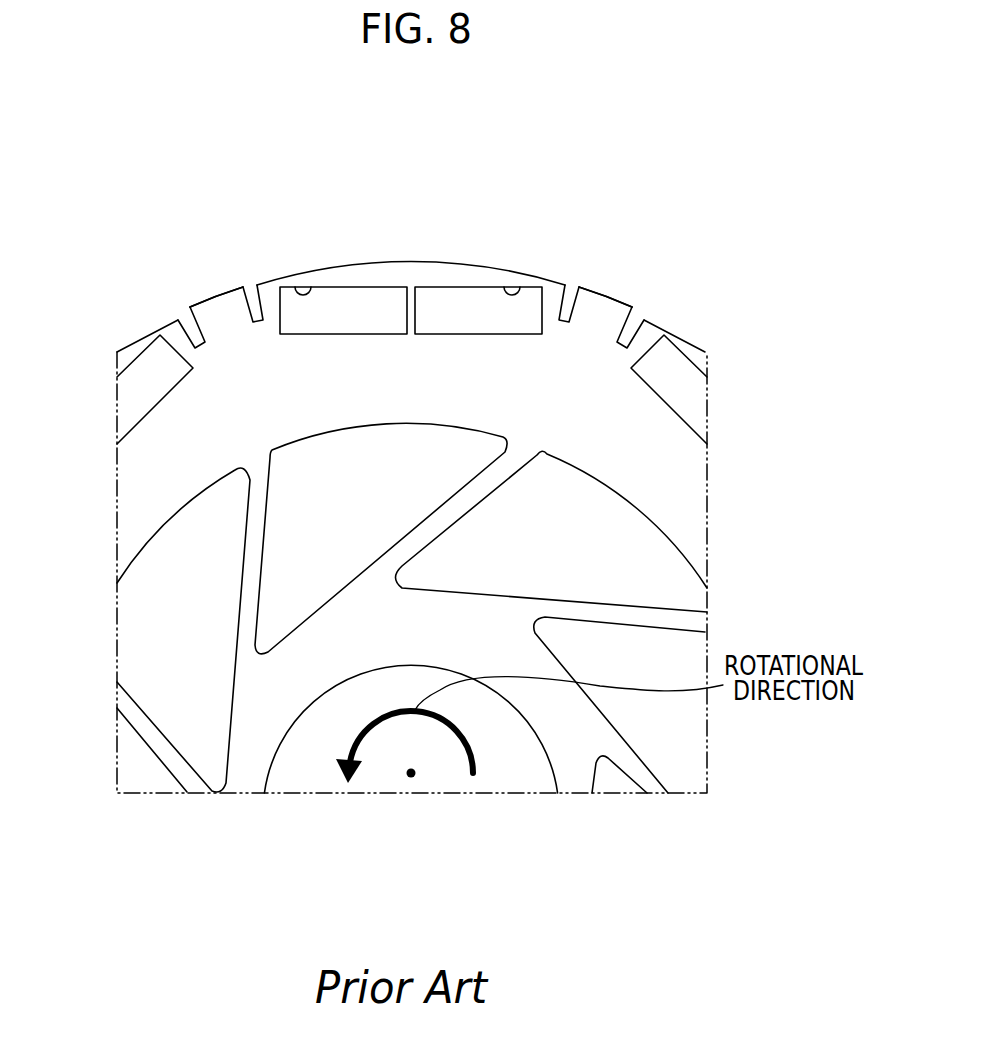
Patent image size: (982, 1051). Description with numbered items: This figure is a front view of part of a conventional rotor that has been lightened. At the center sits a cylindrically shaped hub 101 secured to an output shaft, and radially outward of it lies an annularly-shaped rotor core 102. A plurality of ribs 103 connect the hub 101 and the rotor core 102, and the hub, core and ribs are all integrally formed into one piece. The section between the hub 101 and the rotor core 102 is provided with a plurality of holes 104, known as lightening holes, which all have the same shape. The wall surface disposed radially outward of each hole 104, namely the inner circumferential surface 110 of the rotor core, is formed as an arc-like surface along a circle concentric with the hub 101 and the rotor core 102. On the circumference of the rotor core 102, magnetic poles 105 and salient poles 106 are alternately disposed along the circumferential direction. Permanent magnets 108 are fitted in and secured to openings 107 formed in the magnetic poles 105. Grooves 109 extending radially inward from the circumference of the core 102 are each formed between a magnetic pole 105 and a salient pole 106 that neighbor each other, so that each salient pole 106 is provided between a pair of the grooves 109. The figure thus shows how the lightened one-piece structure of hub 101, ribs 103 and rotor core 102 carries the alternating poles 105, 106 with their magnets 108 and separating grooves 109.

The hub 101 is at (242, 768).
The rotor core 102 is at (677, 482).
The ribs 103 is at (252, 537).
The holes 104 is at (285, 572).
The magnetic poles 105 is at (409, 256).
The salient poles 106 is at (213, 293).
The openings 107 is at (303, 292).
The permanent magnets 108 is at (362, 303).
The grooves 109 is at (190, 330).
The inner circumferential surface of the rotor core 110 is at (392, 430).